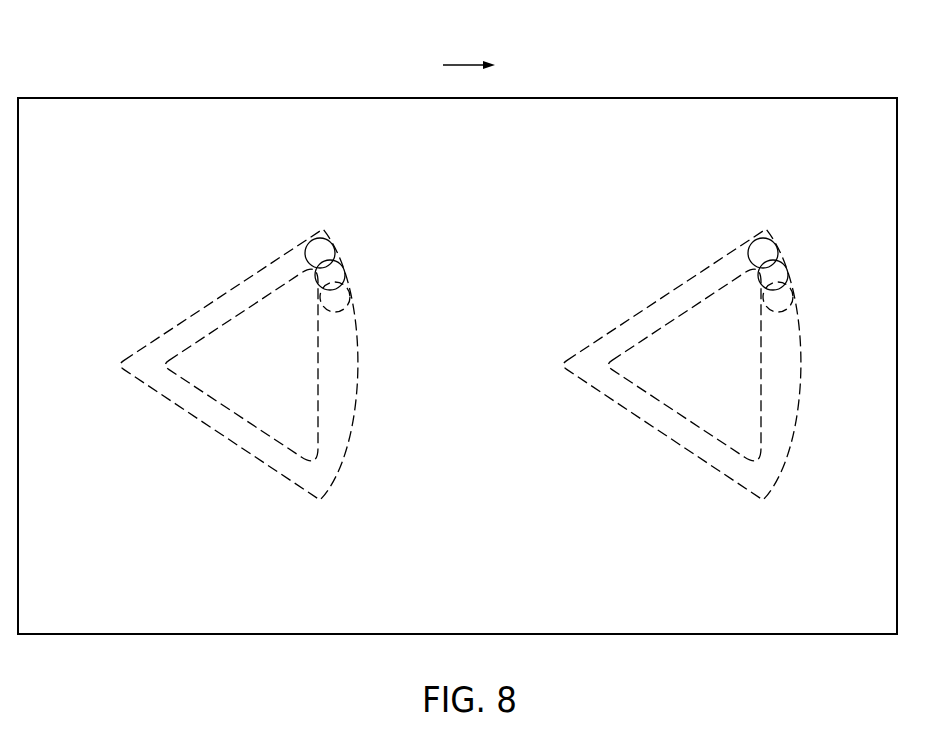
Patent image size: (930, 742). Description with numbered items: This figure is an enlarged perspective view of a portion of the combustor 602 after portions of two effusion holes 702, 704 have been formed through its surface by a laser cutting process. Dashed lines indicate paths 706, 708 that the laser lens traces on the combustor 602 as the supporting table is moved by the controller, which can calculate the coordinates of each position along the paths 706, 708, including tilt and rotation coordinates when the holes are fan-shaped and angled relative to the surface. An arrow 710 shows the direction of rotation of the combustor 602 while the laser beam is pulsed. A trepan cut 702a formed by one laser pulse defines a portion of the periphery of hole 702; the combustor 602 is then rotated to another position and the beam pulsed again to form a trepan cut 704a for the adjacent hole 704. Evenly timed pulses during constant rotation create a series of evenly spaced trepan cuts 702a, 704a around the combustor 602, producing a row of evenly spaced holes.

The combustor 602 is at (590, 98).
The arrow 710 is at (465, 65).
The effusion hole 702 is at (186, 322).
The effusion hole 704 is at (629, 322).
The path 706 is at (236, 283).
The path 708 is at (679, 283).
The trepan cut 702a is at (348, 293).
The trepan cut 704a is at (791, 293).